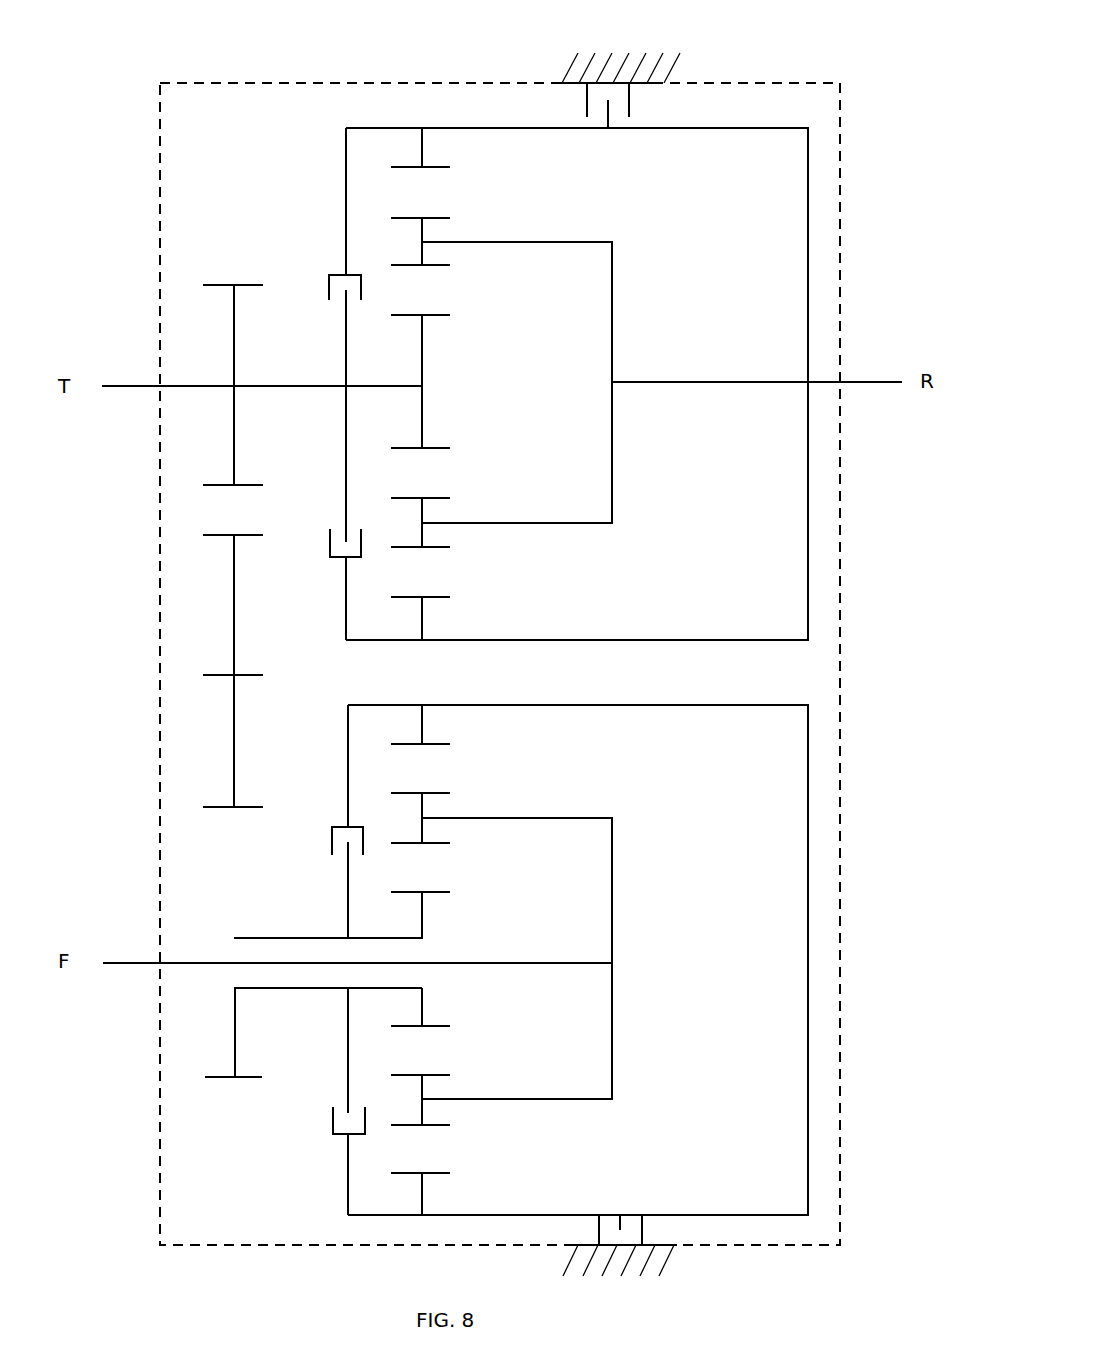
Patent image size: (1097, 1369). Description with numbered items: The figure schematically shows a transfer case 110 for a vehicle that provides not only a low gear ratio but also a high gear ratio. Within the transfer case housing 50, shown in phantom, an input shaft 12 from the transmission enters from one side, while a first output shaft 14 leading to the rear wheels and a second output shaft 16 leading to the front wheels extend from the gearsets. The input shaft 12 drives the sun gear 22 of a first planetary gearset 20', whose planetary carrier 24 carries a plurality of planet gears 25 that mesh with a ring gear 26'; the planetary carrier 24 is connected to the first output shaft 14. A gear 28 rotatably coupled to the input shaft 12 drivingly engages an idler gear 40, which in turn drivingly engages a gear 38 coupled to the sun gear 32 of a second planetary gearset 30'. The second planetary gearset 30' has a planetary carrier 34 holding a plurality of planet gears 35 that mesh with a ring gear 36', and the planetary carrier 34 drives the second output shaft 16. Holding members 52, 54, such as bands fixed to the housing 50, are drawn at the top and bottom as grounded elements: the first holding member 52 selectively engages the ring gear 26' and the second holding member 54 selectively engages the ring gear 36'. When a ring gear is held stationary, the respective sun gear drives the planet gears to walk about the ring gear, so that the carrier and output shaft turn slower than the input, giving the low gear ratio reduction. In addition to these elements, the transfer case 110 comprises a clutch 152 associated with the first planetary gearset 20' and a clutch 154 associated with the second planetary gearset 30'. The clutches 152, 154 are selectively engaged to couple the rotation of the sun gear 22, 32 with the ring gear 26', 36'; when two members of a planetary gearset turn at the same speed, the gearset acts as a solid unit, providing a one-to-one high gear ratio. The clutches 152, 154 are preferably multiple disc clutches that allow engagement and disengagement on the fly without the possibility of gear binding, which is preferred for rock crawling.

The transfer case 110 is at (866, 121).
The transfer case housing 50 is at (842, 1008).
The first holding member 52 is at (630, 108).
The second holding member 54 is at (642, 1230).
The input shaft 12 is at (135, 383).
The first output shaft 14 is at (863, 383).
The second output shaft 16 is at (137, 963).
The first planetary gearset 20' is at (622, 406).
The sun gear 22 is at (422, 370).
The planetary carrier 24 is at (523, 238).
The planet gears 25 is at (422, 533).
The ring gear 26' is at (622, 384).
The gear 28 is at (234, 398).
The second planetary gearset 30' is at (566, 932).
The sun gear 32 is at (422, 910).
The planetary carrier 34 is at (508, 818).
The planet gears 35 is at (422, 1108).
The ring gear 36' is at (623, 960).
The gear 38 is at (235, 1028).
The idler gear 40 is at (234, 612).
The clutch 152 is at (328, 284).
The clutch 154 is at (330, 828).